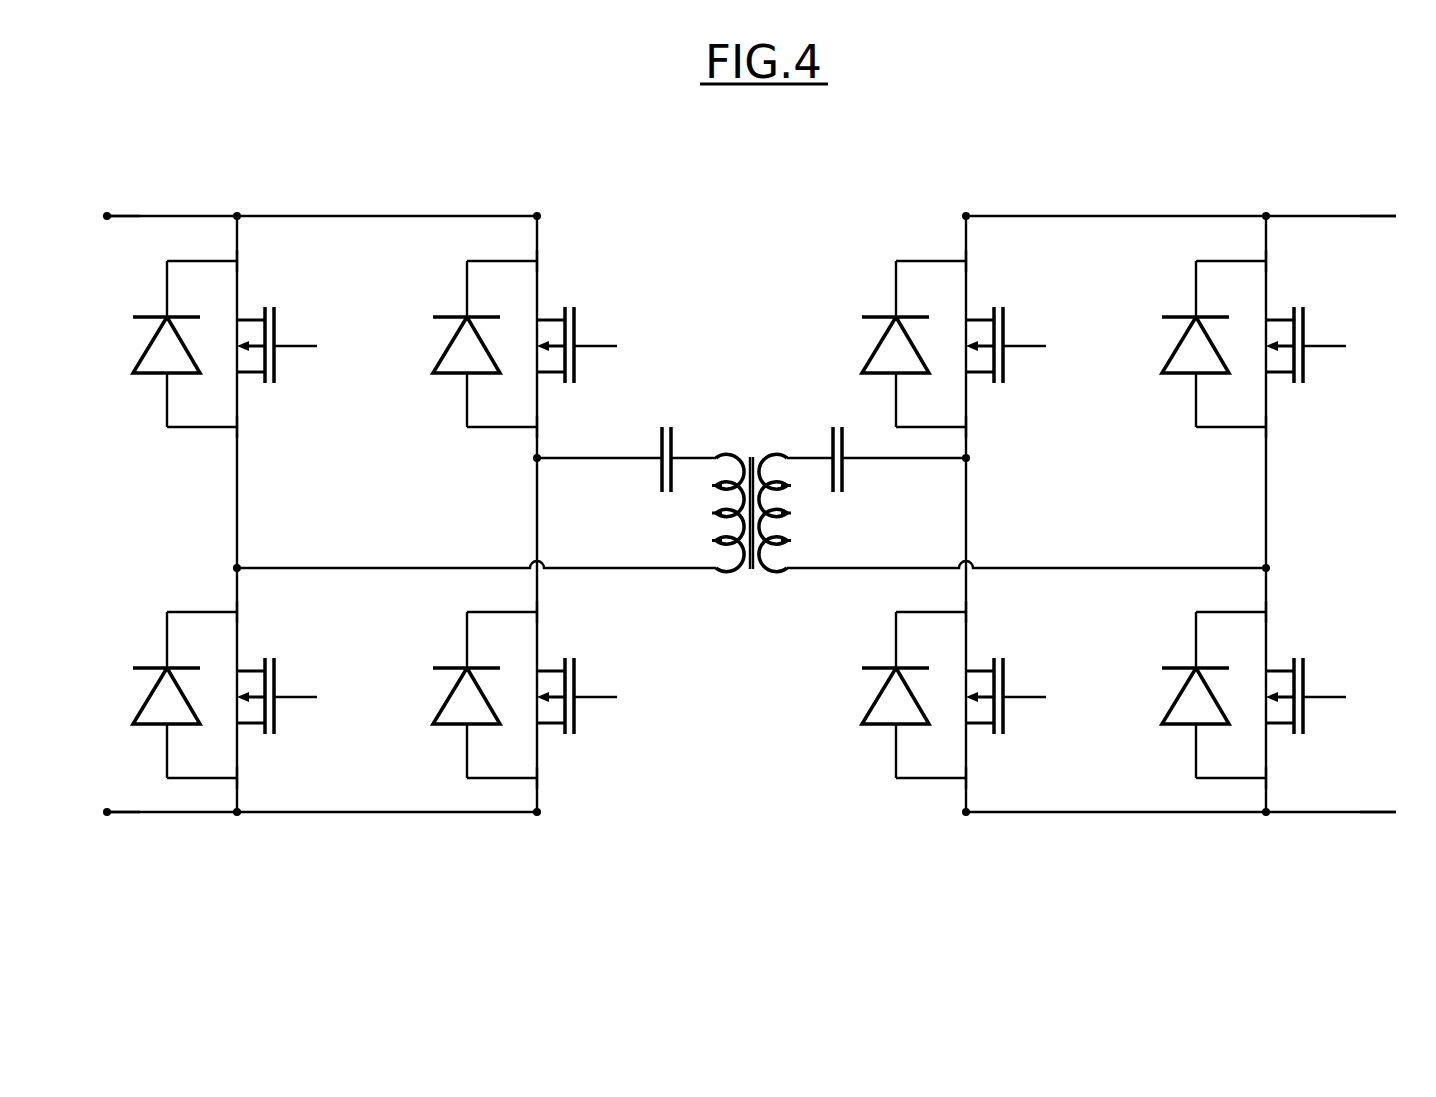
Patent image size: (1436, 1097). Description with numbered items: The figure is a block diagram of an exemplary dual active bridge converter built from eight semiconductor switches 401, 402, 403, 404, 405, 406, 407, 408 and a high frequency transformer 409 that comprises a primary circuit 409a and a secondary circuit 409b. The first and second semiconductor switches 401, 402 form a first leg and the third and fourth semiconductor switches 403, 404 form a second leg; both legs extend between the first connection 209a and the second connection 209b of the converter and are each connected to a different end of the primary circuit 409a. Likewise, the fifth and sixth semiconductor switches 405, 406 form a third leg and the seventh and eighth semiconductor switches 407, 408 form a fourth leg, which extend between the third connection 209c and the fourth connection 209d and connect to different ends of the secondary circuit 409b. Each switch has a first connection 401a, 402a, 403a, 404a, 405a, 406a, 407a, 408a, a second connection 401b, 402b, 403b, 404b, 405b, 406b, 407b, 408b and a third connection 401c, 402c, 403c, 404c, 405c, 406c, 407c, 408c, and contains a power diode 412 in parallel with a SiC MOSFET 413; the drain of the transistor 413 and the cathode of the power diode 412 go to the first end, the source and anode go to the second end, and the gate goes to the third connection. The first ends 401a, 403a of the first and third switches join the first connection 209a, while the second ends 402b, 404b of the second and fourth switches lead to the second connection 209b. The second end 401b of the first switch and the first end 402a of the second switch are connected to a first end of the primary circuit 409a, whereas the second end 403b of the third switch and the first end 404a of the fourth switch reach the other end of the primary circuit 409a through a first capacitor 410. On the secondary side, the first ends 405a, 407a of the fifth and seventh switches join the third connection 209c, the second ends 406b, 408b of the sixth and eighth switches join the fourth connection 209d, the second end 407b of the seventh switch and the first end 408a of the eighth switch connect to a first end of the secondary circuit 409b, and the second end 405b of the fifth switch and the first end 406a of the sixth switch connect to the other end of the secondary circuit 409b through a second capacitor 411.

The first connection 209a is at (107, 216).
The second connection 209b is at (107, 812).
The third connection 209c is at (1396, 216).
The fourth connection 209d is at (1396, 812).
The first semiconductor switch 401 is at (222, 333).
The first connection of first semiconductor switch 401a is at (237, 261).
The second connection of first semiconductor switch 401b is at (237, 427).
The third connection of first semiconductor switch 401c is at (317, 346).
The second semiconductor switch 402 is at (231, 684).
The first connection of second semiconductor switch 402a is at (237, 612).
The second connection of second semiconductor switch 402b is at (237, 778).
The third connection of second semiconductor switch 402c is at (317, 697).
The third semiconductor switch 403 is at (531, 333).
The first connection of third semiconductor switch 403a is at (537, 261).
The second connection of third semiconductor switch 403b is at (537, 427).
The third connection of third semiconductor switch 403c is at (617, 346).
The fourth semiconductor switch 404 is at (531, 684).
The first connection of fourth semiconductor switch 404a is at (537, 612).
The second connection of fourth semiconductor switch 404b is at (537, 778).
The third connection of fourth semiconductor switch 404c is at (617, 697).
The fifth semiconductor switch 405 is at (960, 333).
The first connection of fifth semiconductor switch 405a is at (966, 261).
The second connection of fifth semiconductor switch 405b is at (966, 427).
The third connection of fifth semiconductor switch 405c is at (1046, 346).
The sixth semiconductor switch 406 is at (960, 684).
The first connection of sixth semiconductor switch 406a is at (966, 612).
The second connection of sixth semiconductor switch 406b is at (966, 778).
The third connection of sixth semiconductor switch 406c is at (1046, 697).
The seventh semiconductor switch 407 is at (1260, 333).
The first connection of seventh semiconductor switch 407a is at (1266, 261).
The second connection of seventh semiconductor switch 407b is at (1266, 427).
The third connection of seventh semiconductor switch 407c is at (1346, 346).
The eighth semiconductor switch 408 is at (1260, 684).
The first connection of eighth semiconductor switch 408a is at (1266, 612).
The second connection of eighth semiconductor switch 408b is at (1266, 778).
The third connection of eighth semiconductor switch 408c is at (1346, 697).
The high frequency transformer 409 is at (757, 509).
The primary circuit 409a is at (732, 568).
The secondary circuit 409b is at (770, 568).
The first capacitor 410 is at (667, 421).
The second capacitor 411 is at (835, 421).
The power diode 412 is at (150, 343).
The SiC MOSFET 413 is at (287, 375).